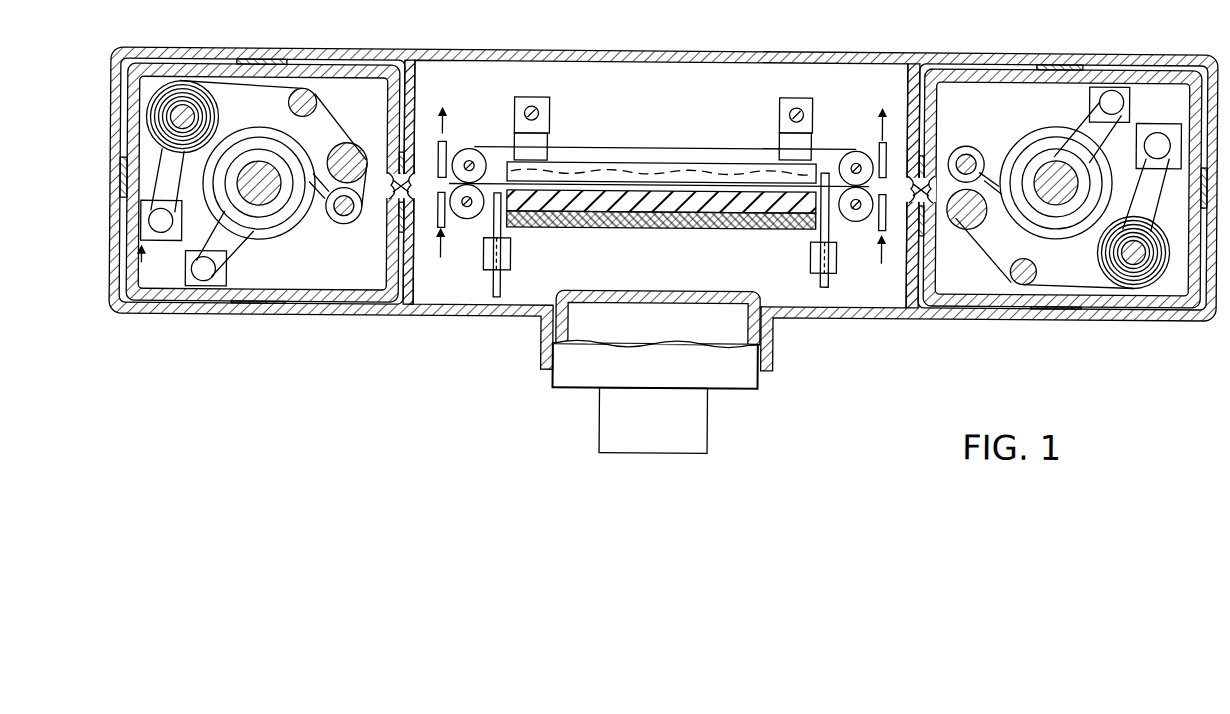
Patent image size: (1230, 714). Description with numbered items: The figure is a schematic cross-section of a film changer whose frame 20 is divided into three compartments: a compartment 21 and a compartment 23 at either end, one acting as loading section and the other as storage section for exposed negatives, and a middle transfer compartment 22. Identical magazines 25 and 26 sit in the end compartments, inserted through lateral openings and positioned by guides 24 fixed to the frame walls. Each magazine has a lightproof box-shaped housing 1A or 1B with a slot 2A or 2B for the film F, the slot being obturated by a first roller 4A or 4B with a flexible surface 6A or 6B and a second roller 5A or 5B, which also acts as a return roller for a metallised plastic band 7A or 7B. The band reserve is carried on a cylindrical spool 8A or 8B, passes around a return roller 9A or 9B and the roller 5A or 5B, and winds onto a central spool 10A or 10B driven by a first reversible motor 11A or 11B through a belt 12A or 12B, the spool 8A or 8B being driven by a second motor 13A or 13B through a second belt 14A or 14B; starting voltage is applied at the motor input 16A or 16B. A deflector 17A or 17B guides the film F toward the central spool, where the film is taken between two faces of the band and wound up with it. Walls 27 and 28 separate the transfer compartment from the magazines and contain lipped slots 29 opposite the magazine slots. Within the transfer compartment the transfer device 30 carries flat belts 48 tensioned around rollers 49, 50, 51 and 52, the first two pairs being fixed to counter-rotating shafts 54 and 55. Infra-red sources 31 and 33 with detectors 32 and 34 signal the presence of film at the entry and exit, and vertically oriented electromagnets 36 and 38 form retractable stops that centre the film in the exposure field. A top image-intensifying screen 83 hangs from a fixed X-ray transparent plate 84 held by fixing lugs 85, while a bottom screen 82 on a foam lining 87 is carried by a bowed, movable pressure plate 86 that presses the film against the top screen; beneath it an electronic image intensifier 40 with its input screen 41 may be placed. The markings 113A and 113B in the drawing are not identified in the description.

The box-shaped housing 1A is at (236, 284).
The box-shaped housing 1B is at (968, 290).
The slot 2A is at (415, 169).
The slot 2B is at (933, 196).
The cylindrical roller 4A is at (360, 210).
The cylindrical roller 4B is at (958, 148).
The second roller 5A is at (360, 148).
The second roller 5B is at (980, 220).
The flexible surface 6A is at (352, 214).
The flexible surface 6B is at (970, 148).
The flexible band 7A is at (336, 112).
The flexible band 7B is at (990, 250).
The cylindrical spool 8A is at (190, 114).
The cylindrical spool 8B is at (1125, 250).
The return roller 9A is at (307, 113).
The return roller 9B is at (1038, 266).
The central spool 10A is at (285, 225).
The central spool 10B is at (1095, 140).
The first reversible motor 11A is at (204, 284).
The first reversible motor 11B is at (1112, 80).
The belt 12A is at (245, 210).
The belt 12B is at (1090, 130).
The second reversible motor 13A is at (178, 232).
The second reversible motor 13B is at (1155, 116).
The second belt 14A is at (168, 180).
The second belt 14B is at (1155, 194).
The motor input 16A is at (160, 264).
The motor input 16B is at (975, 47).
The deflector 17A is at (322, 200).
The deflector 17B is at (1005, 160).
The frame 20 is at (552, 47).
The compartment 21 is at (325, 300).
The transfer compartment 22 is at (700, 47).
The compartment 23 is at (1112, 302).
The guides 24 is at (268, 58).
The magazine 25 is at (178, 302).
The magazine 26 is at (948, 302).
The wall 27 is at (416, 84).
The wall 28 is at (914, 76).
The slots 29 is at (661, 211).
The transfer device 30 is at (657, 106).
The infra-red radiation source 31 is at (428, 247).
The radiation detector 32 is at (450, 142).
The infra-red radiation source 33 is at (892, 252).
The radiation detector 34 is at (893, 144).
The retractable stop electromagnet 36 is at (513, 258).
The retractable stop electromagnet 38 is at (812, 255).
The image intensifier 40 is at (578, 388).
The input screen 41 is at (650, 299).
The flat belts 48 is at (650, 159).
The rollers 49 is at (476, 146).
The rollers 50 is at (466, 216).
The rollers 51 is at (857, 146).
The rollers 52 is at (857, 216).
The shaft 54 is at (476, 158).
The shaft 55 is at (482, 245).
The bottom image-intensifier screen 82 is at (727, 190).
The top image-intensifying screen 83 is at (592, 159).
The first rectangular plate 84 is at (684, 144).
The fixing lugs 85 is at (551, 114).
The bottom rectangular plate 86 is at (648, 225).
The flexible lining 87 is at (688, 209).
The direction arrow A 113A is at (148, 264).
The direction arrow B 113B is at (1160, 112).
The film F is at (659, 169).